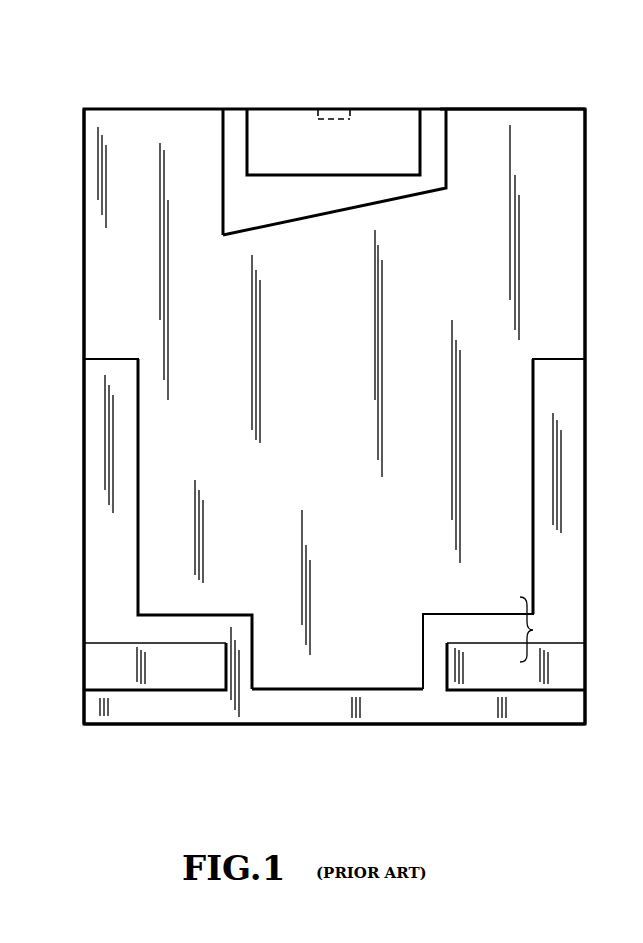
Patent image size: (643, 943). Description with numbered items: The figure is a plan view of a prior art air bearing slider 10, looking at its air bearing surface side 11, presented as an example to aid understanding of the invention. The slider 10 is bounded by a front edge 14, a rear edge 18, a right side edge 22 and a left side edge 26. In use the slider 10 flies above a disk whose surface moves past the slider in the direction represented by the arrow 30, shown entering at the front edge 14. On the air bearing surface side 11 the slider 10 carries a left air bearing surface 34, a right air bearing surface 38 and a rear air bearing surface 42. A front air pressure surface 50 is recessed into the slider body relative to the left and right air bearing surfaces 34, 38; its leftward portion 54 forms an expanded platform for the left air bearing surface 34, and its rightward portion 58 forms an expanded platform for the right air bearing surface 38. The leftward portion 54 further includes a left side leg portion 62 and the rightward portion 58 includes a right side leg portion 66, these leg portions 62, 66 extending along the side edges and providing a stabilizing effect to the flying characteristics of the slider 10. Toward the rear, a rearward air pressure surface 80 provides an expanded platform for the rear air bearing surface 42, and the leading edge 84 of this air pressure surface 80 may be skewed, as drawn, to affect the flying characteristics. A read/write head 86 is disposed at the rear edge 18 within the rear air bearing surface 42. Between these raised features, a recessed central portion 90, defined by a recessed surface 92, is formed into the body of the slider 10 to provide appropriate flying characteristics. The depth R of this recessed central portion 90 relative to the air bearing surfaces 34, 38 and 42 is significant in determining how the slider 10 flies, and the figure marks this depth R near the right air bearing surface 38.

The air bearing slider 10 is at (97, 56).
The air bearing surface side 11 is at (108, 240).
The front edge 14 is at (188, 725).
The rear edge 18 is at (530, 108).
The right side edge 22 is at (586, 320).
The left side edge 26 is at (84, 318).
The arrow 30 is at (337, 727).
The left air bearing surface 34 is at (95, 668).
The right air bearing surface 38 is at (578, 670).
The rear air bearing surface 42 is at (265, 117).
The front air pressure surface 50 is at (296, 715).
The leftward portion 54 is at (198, 620).
The rightward portion 58 is at (440, 622).
The left side leg portion 62 is at (95, 518).
The right side leg portion 66 is at (580, 486).
The rearward air pressure surface 80 is at (250, 200).
The leading edge 84 is at (333, 222).
The read/write head 86 is at (341, 108).
The recessed central portion 90 is at (498, 448).
The recessed surface 92 is at (344, 512).
The depth R is at (533, 630).